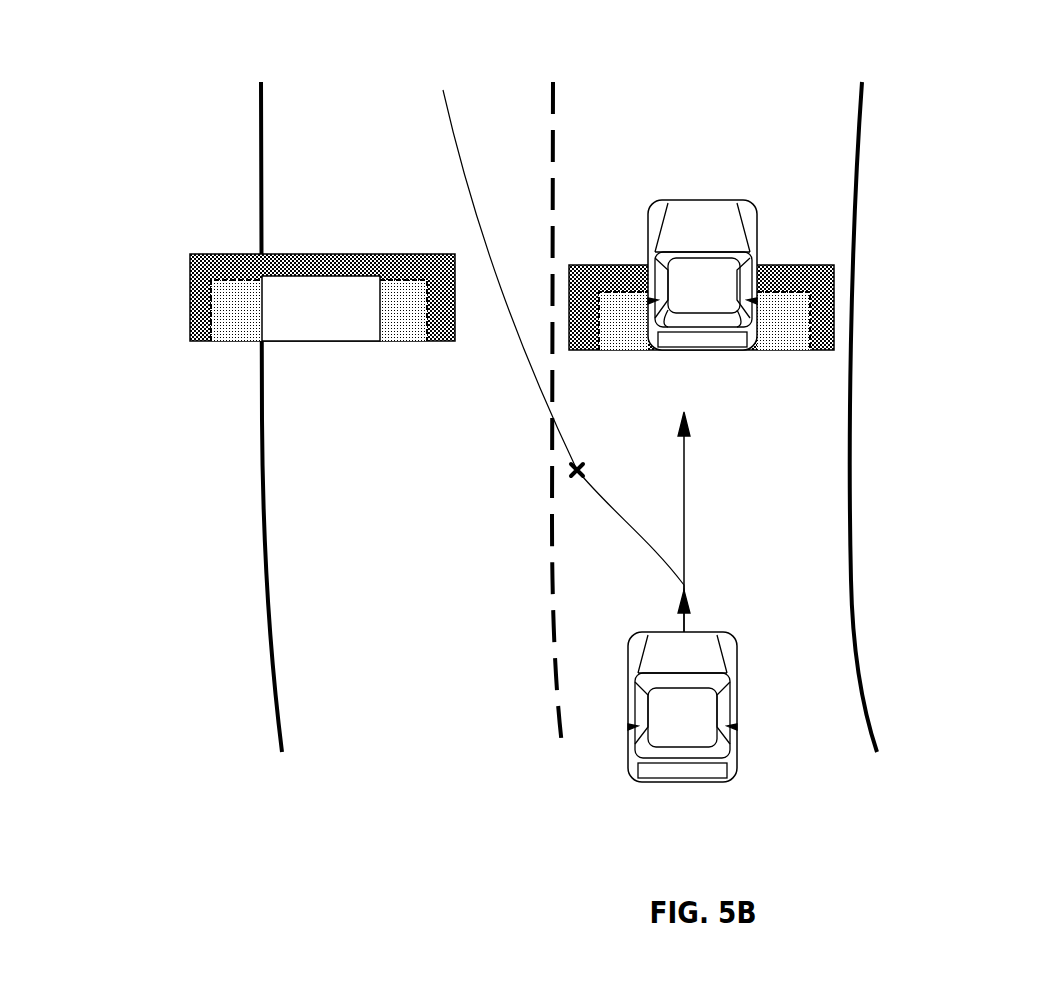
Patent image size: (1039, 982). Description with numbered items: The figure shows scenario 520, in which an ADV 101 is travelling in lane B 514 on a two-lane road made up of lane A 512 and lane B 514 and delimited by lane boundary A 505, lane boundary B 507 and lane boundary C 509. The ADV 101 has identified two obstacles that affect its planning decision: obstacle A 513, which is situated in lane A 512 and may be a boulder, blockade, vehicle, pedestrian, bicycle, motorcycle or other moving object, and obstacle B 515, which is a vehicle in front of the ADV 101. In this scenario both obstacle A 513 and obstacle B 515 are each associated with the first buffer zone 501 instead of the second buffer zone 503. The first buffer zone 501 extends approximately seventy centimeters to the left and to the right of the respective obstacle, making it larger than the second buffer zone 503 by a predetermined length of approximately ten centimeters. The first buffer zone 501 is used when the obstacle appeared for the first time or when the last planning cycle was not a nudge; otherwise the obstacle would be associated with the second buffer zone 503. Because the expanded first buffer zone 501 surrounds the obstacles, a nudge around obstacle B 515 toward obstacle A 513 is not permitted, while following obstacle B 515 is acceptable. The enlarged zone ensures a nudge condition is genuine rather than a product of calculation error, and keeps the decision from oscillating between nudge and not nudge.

The ADV 101 is at (667, 740).
The buffer zone 1 501 is at (287, 257).
The buffer zone 2 503 is at (397, 327).
The lane boundary A 505 is at (253, 825).
The lane boundary B 507 is at (500, 825).
The lane boundary C 509 is at (899, 825).
The lane A 512 is at (370, 48).
The obstacle A 513 is at (308, 325).
The lane B 514 is at (720, 48).
The obstacle B 515 is at (703, 208).
The scenario 520 is at (730, 329).